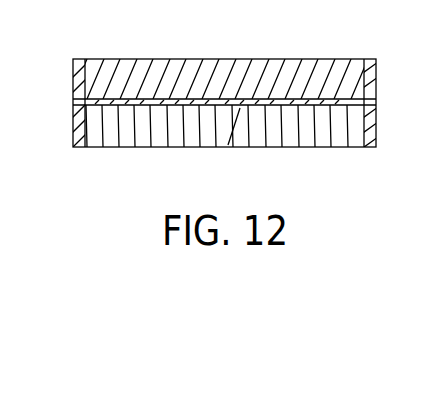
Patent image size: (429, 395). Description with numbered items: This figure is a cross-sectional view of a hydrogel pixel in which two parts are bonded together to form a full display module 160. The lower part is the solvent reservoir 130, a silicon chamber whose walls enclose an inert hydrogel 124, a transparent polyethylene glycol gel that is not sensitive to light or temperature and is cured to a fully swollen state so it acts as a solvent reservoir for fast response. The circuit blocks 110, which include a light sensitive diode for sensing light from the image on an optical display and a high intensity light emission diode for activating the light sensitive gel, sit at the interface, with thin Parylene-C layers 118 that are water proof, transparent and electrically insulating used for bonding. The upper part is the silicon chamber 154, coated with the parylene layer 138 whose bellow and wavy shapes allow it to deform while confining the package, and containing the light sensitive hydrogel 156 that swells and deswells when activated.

The circuit blocks 110 is at (303, 110).
The Parylene-C layer 118 is at (73, 100).
The inert hydrogel 124 is at (356, 128).
The solvent reservoir 130 is at (74, 133).
The parylene layer 138 is at (122, 58).
The silicon chamber 154 is at (368, 75).
The light sensitive hydrogel 156 is at (208, 64).
The display module 160 is at (325, 155).